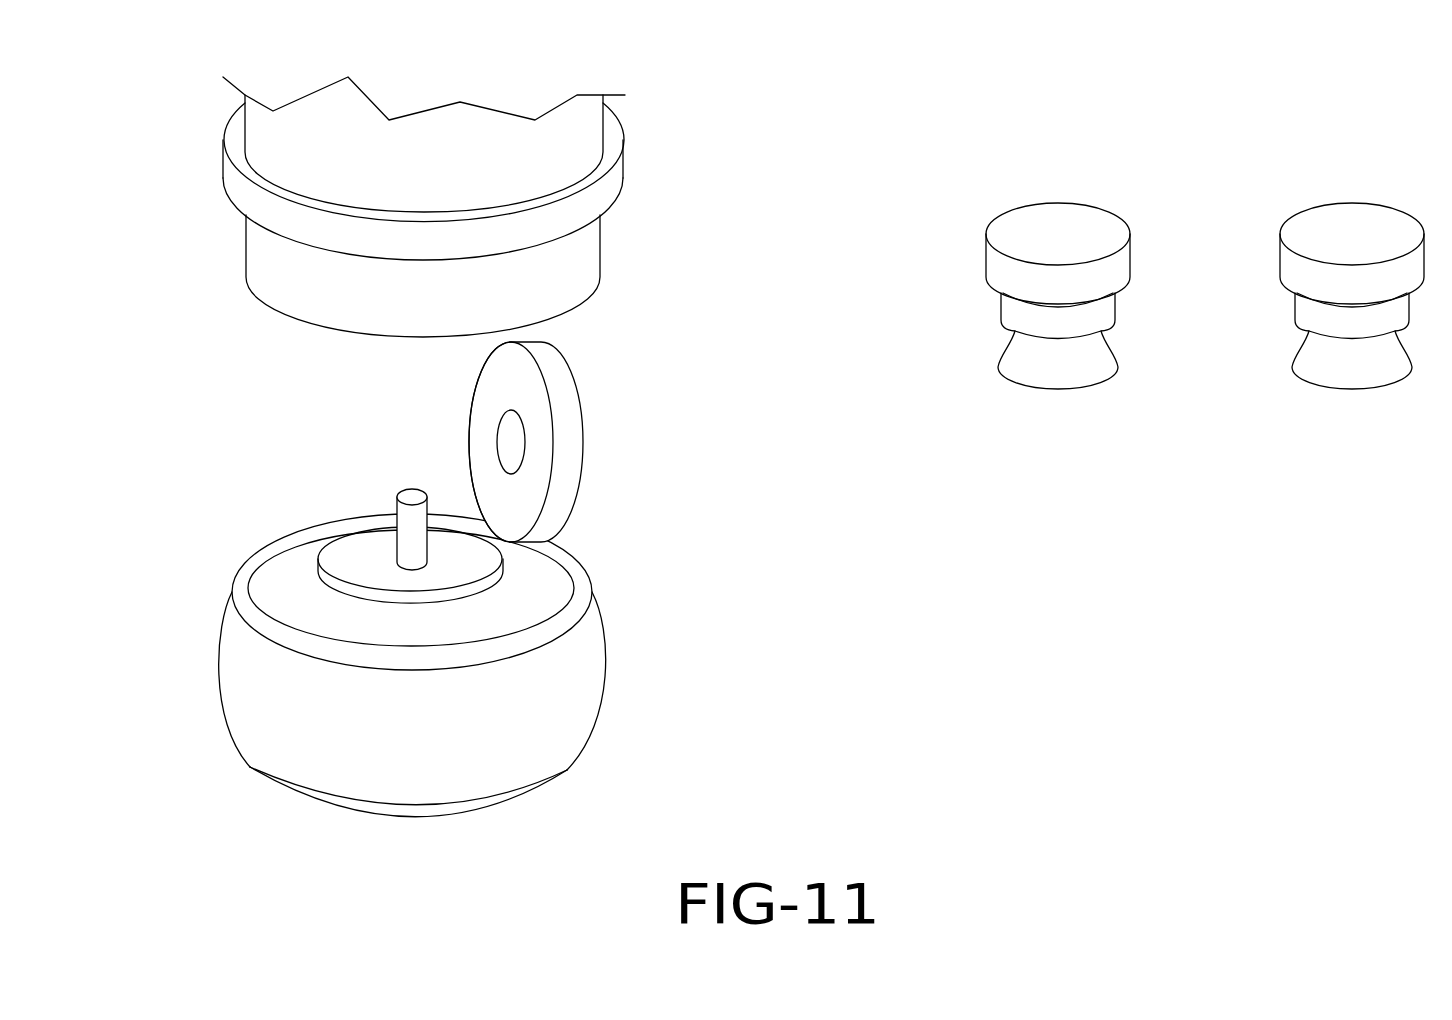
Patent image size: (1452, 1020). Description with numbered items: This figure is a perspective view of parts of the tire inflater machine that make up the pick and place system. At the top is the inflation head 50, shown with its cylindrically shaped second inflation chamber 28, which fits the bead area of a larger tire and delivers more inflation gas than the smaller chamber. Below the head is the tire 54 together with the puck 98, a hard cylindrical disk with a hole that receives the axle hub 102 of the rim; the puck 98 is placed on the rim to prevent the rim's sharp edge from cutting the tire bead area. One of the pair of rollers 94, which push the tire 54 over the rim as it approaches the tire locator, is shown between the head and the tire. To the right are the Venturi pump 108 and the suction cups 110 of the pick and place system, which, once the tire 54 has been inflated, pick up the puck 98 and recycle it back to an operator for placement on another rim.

The second inflation chamber 28 is at (273, 267).
The inflation head 50 is at (562, 142).
The tire 54 is at (567, 722).
The rollers 94 is at (560, 372).
The puck 98 is at (470, 577).
The axle hub 102 is at (415, 515).
The Venturi pump 108 is at (1205, 283).
The suction cups 110 is at (1323, 375).